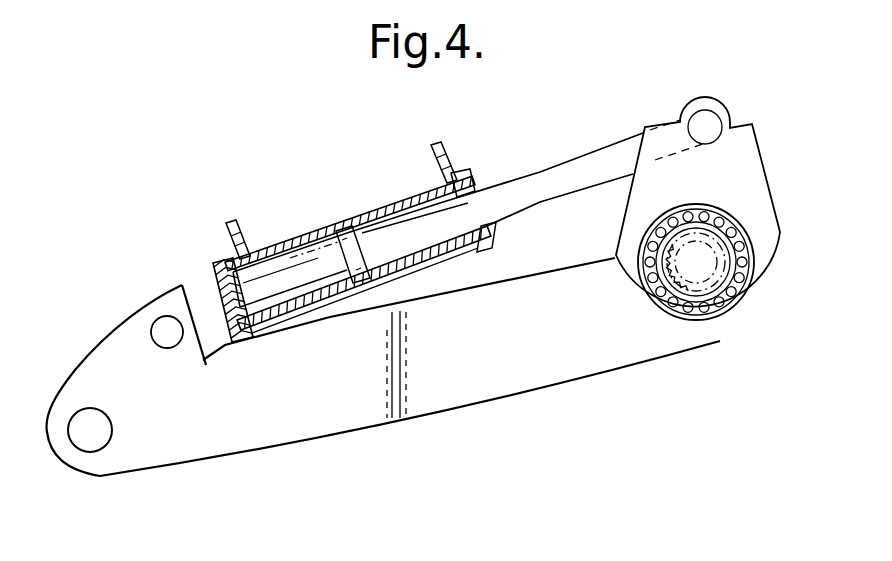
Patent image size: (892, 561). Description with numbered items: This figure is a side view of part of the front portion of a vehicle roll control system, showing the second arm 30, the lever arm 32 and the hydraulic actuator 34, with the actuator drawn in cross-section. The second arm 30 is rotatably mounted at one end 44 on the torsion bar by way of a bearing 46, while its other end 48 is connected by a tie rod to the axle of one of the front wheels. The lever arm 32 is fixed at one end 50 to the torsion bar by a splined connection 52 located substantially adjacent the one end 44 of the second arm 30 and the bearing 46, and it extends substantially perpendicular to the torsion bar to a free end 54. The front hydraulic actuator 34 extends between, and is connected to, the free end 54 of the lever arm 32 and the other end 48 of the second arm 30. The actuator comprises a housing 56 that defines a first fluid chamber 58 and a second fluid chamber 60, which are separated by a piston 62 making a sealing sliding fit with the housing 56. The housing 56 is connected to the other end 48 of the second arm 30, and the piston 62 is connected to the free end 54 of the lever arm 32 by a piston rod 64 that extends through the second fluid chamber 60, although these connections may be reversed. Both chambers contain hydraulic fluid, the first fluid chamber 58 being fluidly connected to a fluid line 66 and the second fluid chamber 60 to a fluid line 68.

The second arm 30 is at (380, 388).
The lever arm 32 is at (737, 168).
The hydraulic actuator 34 is at (468, 165).
The one end of the second arm 44 is at (763, 267).
The bearing 46 is at (743, 243).
The other end of the second arm 48 is at (78, 462).
The one end of the lever arm 50 is at (720, 287).
The splined connection 52 is at (673, 262).
The free end of the lever arm 54 is at (722, 95).
The housing 56 is at (490, 228).
The first fluid chamber 58 is at (305, 268).
The second fluid chamber 60 is at (473, 170).
The piston 62 is at (352, 257).
The piston rod 64 is at (588, 157).
The fluid line 66 is at (241, 224).
The fluid line 68 is at (437, 162).